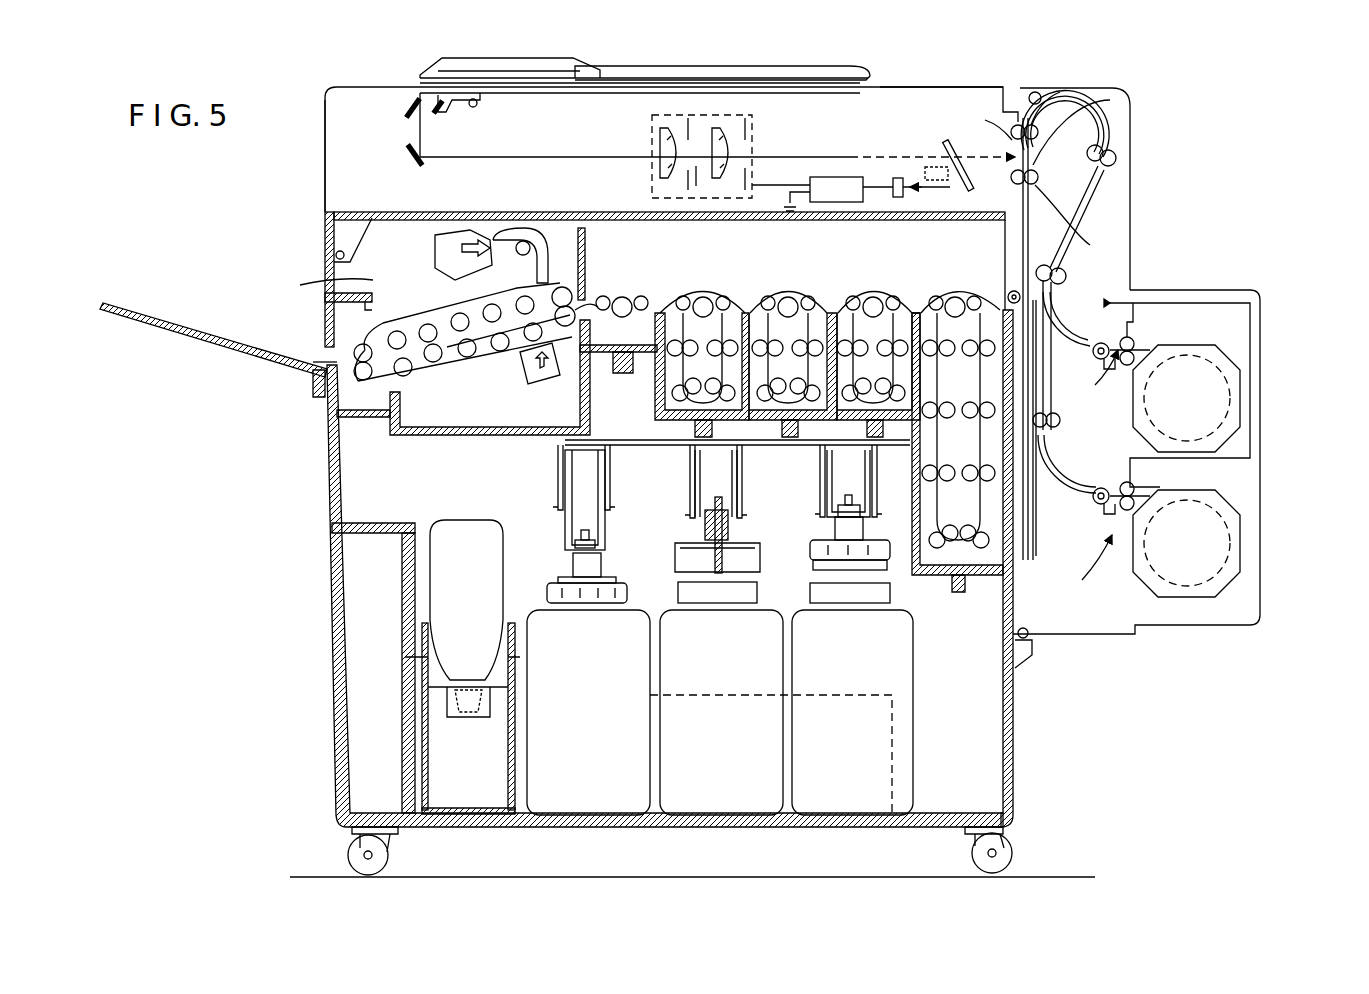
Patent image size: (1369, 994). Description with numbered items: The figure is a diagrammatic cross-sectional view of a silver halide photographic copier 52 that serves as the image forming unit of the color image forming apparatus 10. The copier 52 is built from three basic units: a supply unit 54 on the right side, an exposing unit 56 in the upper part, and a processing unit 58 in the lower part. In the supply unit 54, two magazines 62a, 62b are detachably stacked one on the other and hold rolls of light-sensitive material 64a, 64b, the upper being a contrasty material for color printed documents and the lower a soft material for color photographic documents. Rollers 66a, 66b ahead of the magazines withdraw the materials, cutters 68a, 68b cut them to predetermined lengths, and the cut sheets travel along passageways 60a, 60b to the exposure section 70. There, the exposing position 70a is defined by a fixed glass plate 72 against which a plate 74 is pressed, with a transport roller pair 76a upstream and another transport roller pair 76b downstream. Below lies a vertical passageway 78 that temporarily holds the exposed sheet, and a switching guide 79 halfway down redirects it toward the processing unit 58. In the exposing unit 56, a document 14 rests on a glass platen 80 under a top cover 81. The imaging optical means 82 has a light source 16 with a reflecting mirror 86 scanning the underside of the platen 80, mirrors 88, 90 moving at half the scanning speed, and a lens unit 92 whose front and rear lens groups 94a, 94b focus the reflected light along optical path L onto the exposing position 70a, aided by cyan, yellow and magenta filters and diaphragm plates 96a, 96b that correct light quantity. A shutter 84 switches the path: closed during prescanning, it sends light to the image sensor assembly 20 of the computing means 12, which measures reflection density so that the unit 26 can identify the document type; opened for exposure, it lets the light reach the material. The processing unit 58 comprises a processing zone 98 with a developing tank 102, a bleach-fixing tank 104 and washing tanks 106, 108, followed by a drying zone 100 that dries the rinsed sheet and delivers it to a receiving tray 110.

The color image forming apparatus 10 is at (262, 70).
The means of computing image-forming conditions 12 is at (866, 128).
The document to be copied 14 is at (690, 68).
The light source 16 is at (478, 103).
The image sensor assembly 20 is at (900, 178).
The unit for identifying the type of document 26 is at (845, 177).
The silver halide photographic copier 52 is at (1200, 140).
The light-sensitive material supply unit 54 is at (1266, 298).
The exposing unit 56 is at (912, 88).
The processing unit 58 is at (325, 518).
The passageway 60a is at (1108, 118).
The passageway 60b is at (1055, 370).
The magazine 62a is at (1240, 408).
The magazine 62b is at (1240, 560).
The light-sensitive material 64a is at (1230, 388).
The light-sensitive material 64b is at (1230, 530).
The roller 66a is at (1151, 336).
The roller 66b is at (1135, 490).
The cutter 68a is at (1088, 405).
The cutter 68b is at (1079, 573).
The exposure section 70 is at (999, 113).
The exposing position 70a is at (1035, 130).
The glass plate 72 is at (983, 116).
The plate 74 is at (1096, 168).
The transport roller pair 76a is at (1035, 128).
The transport roller pair 76b is at (1066, 225).
The passageway 78 is at (1040, 500).
The switching guide 79 is at (1010, 292).
The platen 80 is at (512, 86).
The top cover 81 is at (556, 62).
The imaging optical means 82 is at (332, 122).
The shutter 84 is at (950, 142).
The reflecting mirror 86 is at (440, 113).
The mirror 88 is at (406, 110).
The mirror 90 is at (410, 160).
The lens unit 92 is at (650, 165).
The front lens group 94a is at (660, 142).
The rear lens group 94b is at (724, 128).
The plate 96a is at (745, 130).
The plate 96b is at (745, 178).
The processing zone 98 is at (793, 332).
The drying zone 100 is at (300, 285).
The developing tank 102 is at (946, 295).
The bleach-fixing tank 104 is at (890, 295).
The washing tank 106 is at (764, 295).
The washing tank 108 is at (698, 295).
The receiving tray 110 is at (226, 366).